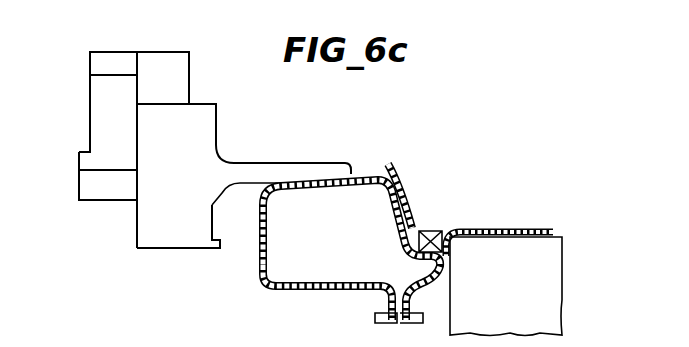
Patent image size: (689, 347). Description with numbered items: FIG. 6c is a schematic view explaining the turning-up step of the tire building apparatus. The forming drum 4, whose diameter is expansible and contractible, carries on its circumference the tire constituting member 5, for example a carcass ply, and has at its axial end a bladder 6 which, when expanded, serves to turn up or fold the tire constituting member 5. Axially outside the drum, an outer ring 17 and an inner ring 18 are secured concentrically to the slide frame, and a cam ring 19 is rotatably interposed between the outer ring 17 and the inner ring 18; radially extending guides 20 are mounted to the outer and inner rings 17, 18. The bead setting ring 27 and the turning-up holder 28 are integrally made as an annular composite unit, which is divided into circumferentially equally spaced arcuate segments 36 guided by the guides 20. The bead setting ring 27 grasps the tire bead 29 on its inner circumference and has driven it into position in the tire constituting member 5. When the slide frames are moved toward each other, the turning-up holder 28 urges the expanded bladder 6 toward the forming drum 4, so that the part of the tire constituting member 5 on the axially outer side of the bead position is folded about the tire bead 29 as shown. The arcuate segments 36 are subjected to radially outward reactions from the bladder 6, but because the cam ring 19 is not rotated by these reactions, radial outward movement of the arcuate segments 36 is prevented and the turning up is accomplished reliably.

The forming drum 4 is at (545, 268).
The tire constituting member 5 is at (505, 228).
The bladder 6 is at (266, 280).
The outer ring 17 is at (112, 62).
The inner ring 18 is at (85, 185).
The cam ring 19 is at (97, 94).
The guide 20 is at (185, 75).
The bead setting ring 27 is at (172, 240).
The turning-up holder 28 is at (318, 176).
The tire bead 29 is at (430, 230).
The arcuate segment 36 is at (226, 138).